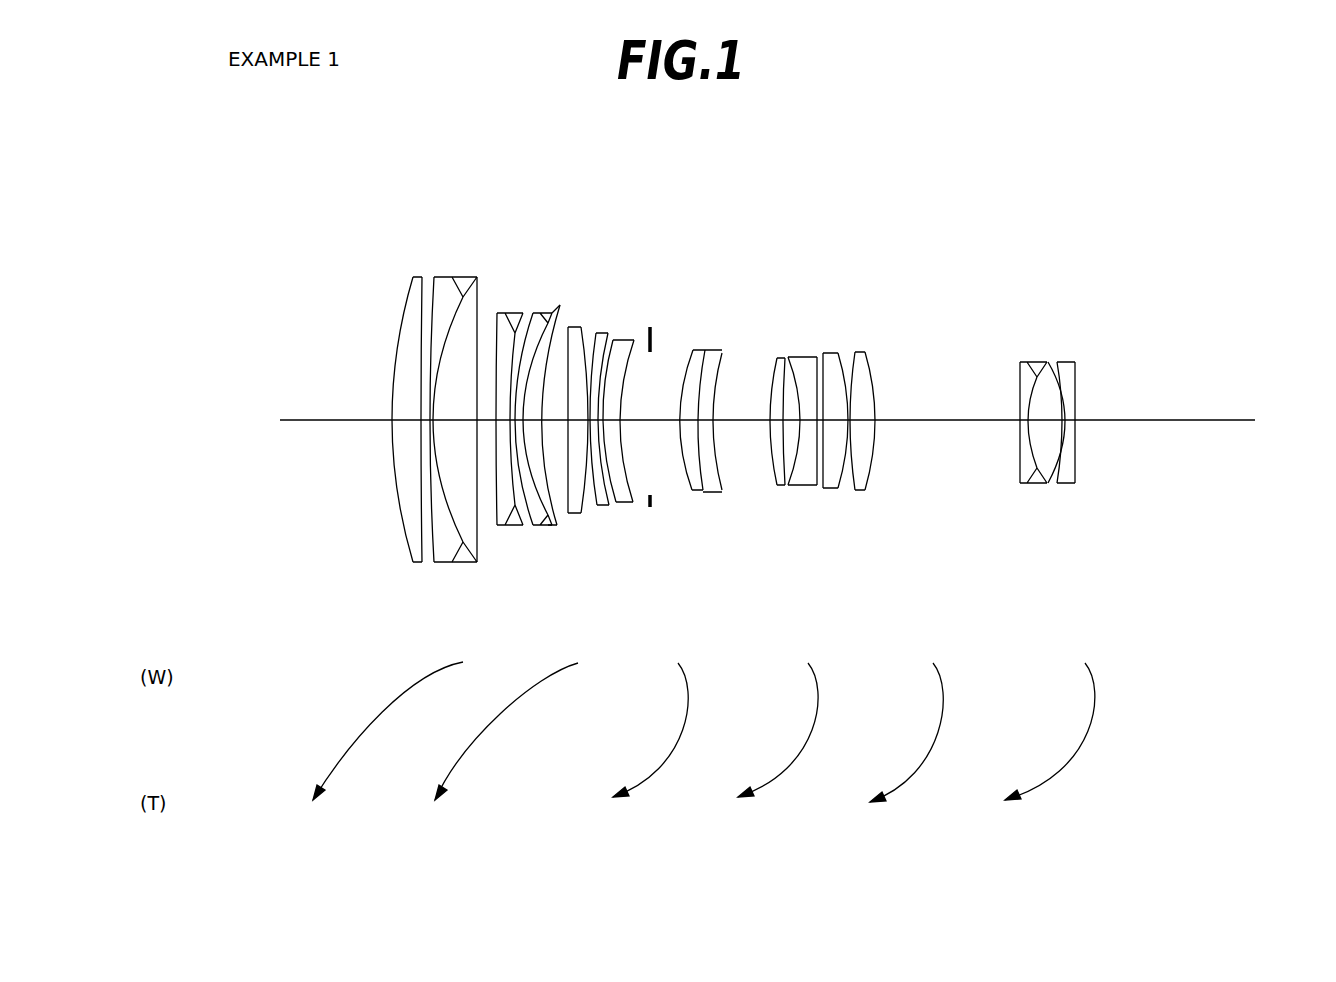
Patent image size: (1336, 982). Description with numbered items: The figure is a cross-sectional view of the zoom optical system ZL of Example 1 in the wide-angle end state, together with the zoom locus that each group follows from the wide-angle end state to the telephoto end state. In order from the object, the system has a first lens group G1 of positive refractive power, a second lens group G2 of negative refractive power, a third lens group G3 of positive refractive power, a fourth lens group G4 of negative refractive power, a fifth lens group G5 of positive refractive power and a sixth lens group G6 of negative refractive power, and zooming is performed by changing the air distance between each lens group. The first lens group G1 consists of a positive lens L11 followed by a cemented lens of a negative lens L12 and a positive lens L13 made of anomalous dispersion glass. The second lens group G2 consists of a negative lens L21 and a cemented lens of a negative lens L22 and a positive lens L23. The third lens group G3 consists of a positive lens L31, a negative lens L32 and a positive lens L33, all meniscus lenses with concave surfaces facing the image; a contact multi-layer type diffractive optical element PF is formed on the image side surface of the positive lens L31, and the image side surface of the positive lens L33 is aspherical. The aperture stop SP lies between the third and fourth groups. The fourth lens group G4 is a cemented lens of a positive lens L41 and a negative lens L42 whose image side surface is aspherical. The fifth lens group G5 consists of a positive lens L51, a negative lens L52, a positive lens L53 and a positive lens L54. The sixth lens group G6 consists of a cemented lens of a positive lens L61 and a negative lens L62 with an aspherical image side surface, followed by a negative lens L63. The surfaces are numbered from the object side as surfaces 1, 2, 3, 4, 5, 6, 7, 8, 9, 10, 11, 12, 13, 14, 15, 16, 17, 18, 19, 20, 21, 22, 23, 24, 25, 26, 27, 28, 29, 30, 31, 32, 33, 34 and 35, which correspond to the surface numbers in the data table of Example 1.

The zoom optical system ZL is at (1093, 92).
The first lens group G1 is at (480, 653).
The second lens group G2 is at (598, 653).
The third lens group G3 is at (717, 653).
The fourth lens group G4 is at (825, 653).
The fifth lens group G5 is at (985, 653).
The sixth lens group G6 is at (1120, 653).
The positive lens L11 is at (417, 562).
The negative lens L12 is at (450, 562).
The positive lens L13 is at (475, 562).
The negative lens L21 is at (508, 525).
The negative lens L22 is at (535, 525).
The positive lens L23 is at (557, 525).
The positive lens L31 is at (575, 514).
The negative lens L32 is at (605, 506).
The positive lens L33 is at (627, 504).
The positive lens L41 is at (697, 492).
The negative lens L42 is at (714, 493).
The positive lens L51 is at (781, 486).
The negative lens L52 is at (802, 486).
The positive lens L53 is at (830, 489).
The positive lens L54 is at (860, 491).
The positive lens L61 is at (1030, 484).
The negative lens L62 is at (1052, 484).
The negative lens L63 is at (1068, 484).
The diffractive optical element PF is at (576, 516).
The aperture stop SP is at (650, 507).
The surface 1 is at (410, 276).
The surface 2 is at (428, 276).
The surface 3 is at (430, 276).
The surface 4 is at (450, 276).
The surface 5 is at (478, 276).
The surface 6 is at (497, 313).
The surface 7 is at (508, 313).
The surface 8 is at (533, 313).
The surface 9 is at (546, 313).
The surface 10 is at (560, 305).
The surface 11 is at (568, 327).
The surface 12 is at (582, 327).
The surface 13 is at (606, 258).
The surface 14 is at (628, 258).
The surface 15 is at (596, 333).
The surface 16 is at (607, 333).
The surface 17 is at (614, 340).
The surface 18 is at (634, 340).
The surface 19 is at (651, 327).
The surface 20 is at (693, 350).
The surface 21 is at (705, 350).
The surface 22 is at (722, 353).
The surface 23 is at (777, 358).
The surface 24 is at (785, 358).
The surface 25 is at (788, 357).
The surface 26 is at (817, 357).
The surface 27 is at (823, 353).
The surface 28 is at (838, 353).
The surface 29 is at (855, 352).
The surface 30 is at (865, 352).
The surface 31 is at (1020, 366).
The surface 32 is at (1028, 362).
The surface 33 is at (1057, 362).
The surface 34 is at (1057, 362).
The surface 35 is at (1075, 362).